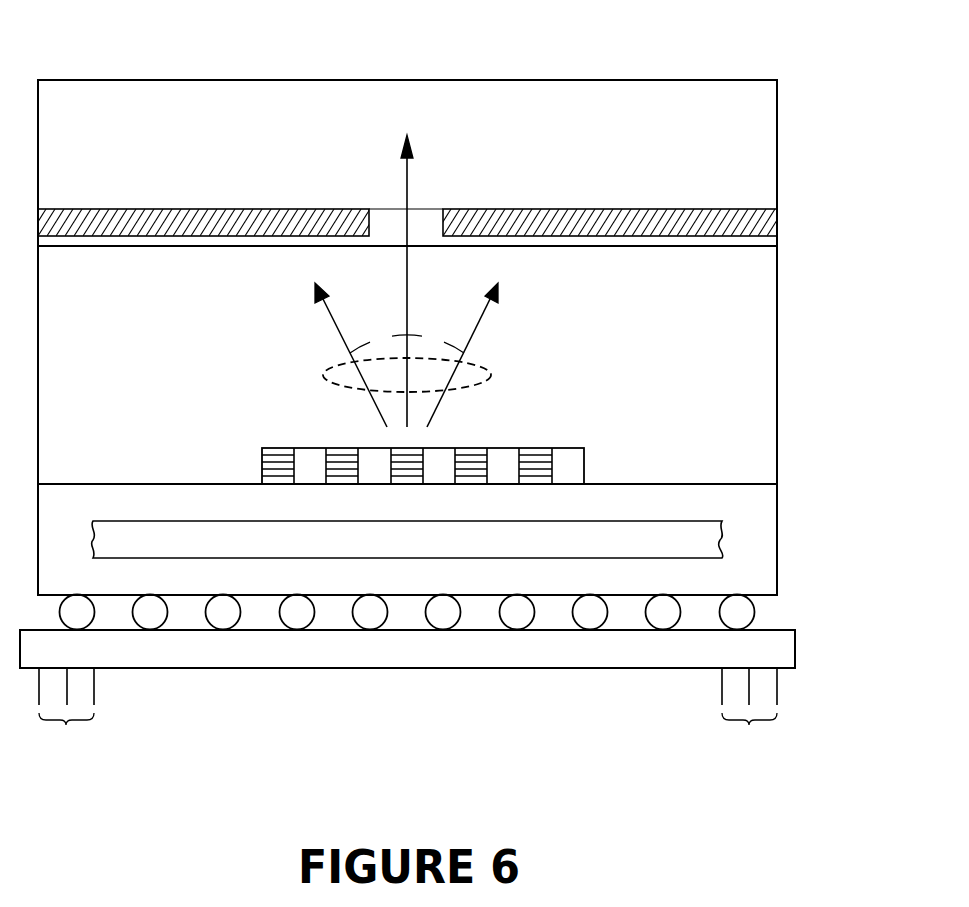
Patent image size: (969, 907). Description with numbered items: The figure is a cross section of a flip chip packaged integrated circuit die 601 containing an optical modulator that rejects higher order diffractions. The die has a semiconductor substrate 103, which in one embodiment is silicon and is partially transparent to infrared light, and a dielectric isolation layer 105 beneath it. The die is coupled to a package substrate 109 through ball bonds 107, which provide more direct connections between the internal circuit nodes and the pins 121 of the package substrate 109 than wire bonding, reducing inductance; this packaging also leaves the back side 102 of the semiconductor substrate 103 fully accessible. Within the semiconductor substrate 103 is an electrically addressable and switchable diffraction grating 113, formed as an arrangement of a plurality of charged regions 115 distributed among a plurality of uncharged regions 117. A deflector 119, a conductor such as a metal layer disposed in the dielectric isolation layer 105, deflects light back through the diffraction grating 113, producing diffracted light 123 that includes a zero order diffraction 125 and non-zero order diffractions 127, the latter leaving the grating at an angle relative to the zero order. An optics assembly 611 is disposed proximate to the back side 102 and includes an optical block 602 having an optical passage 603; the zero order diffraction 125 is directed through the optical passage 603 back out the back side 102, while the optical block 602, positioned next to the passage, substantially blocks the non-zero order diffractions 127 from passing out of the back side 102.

The flip chip packaged integrated circuit die 601 is at (816, 35).
The optics assembly 611 is at (765, 133).
The optical block 602 is at (168, 209).
The optical passage 603 is at (413, 215).
The back side 102 is at (160, 247).
The semiconductor substrate 103 is at (765, 318).
The zero order diffraction 125 is at (418, 142).
The non-zero order diffractions 127 is at (310, 295).
The diffracted light 123 is at (489, 376).
The diffraction grating 113 is at (427, 453).
The charged regions 115 is at (535, 448).
The uncharged regions 117 is at (317, 468).
The deflector 119 is at (645, 530).
The dielectric isolation layer 105 is at (763, 502).
The package substrate 109 is at (785, 648).
The ball bonds 107 is at (445, 622).
The pins 121 is at (408, 710).